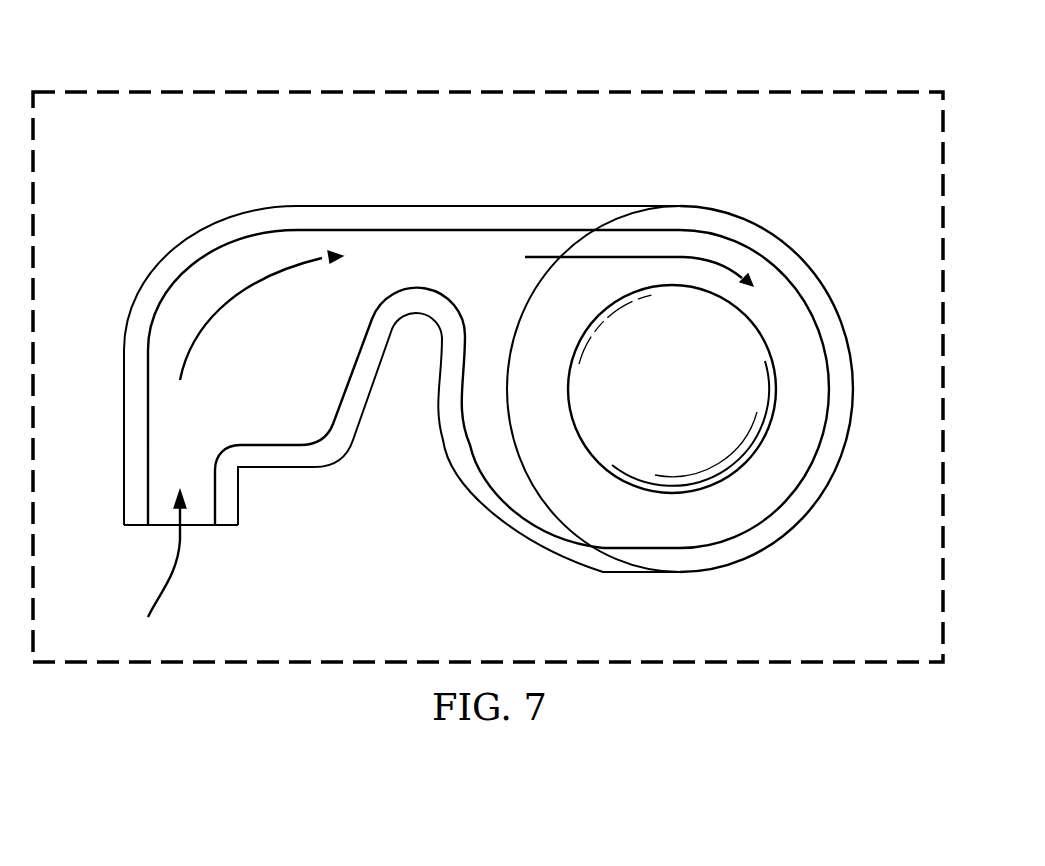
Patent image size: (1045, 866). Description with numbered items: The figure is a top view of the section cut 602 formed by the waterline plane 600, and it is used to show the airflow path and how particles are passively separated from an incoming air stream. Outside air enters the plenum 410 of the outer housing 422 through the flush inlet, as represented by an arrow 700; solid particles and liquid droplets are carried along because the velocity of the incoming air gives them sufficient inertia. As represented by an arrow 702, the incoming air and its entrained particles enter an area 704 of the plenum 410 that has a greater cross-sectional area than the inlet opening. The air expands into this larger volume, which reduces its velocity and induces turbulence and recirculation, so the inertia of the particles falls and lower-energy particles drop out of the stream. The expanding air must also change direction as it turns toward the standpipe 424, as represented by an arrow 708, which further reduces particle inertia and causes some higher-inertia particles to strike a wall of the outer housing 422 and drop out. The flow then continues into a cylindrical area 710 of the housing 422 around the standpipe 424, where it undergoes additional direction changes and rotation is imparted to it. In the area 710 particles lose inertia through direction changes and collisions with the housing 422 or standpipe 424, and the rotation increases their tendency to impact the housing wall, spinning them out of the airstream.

The waterline plane 600 is at (556, 90).
The section cut 602 is at (235, 66).
The plenum 410 is at (477, 272).
The outer housing 422 is at (372, 206).
The standpipe 424 is at (560, 401).
The arrow 700 is at (181, 580).
The arrow 702 is at (240, 288).
The area 704 is at (294, 416).
The arrow 708 is at (565, 262).
The cylindrical area 710 is at (810, 391).